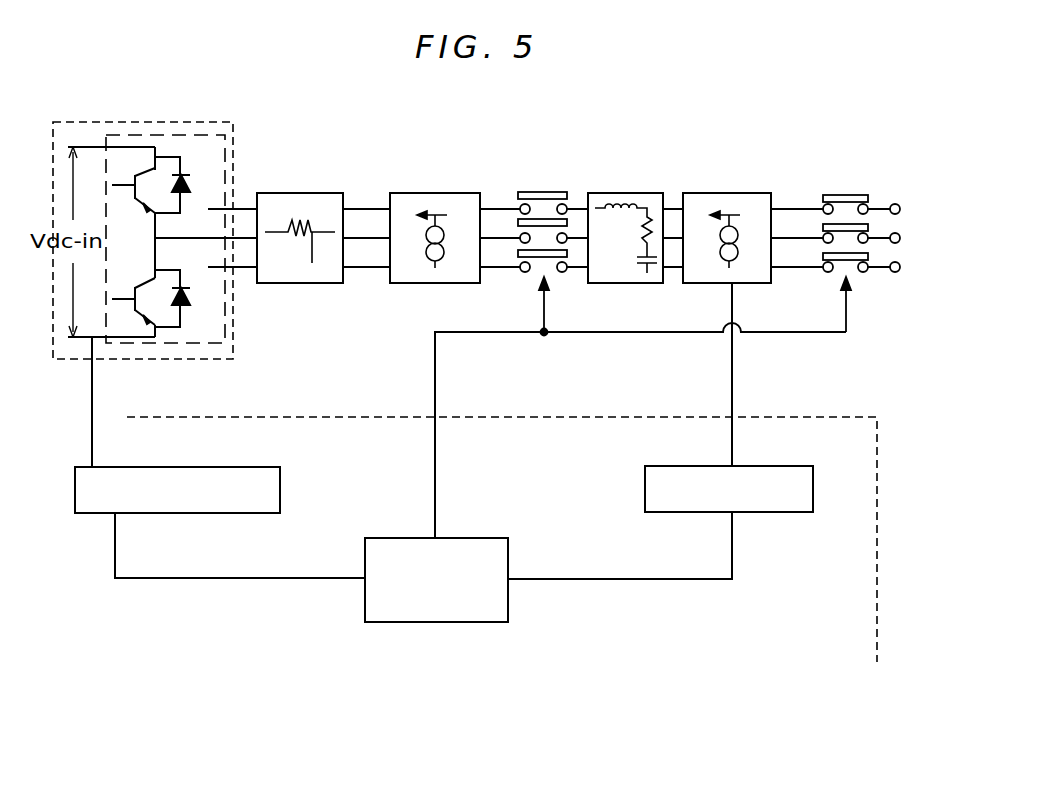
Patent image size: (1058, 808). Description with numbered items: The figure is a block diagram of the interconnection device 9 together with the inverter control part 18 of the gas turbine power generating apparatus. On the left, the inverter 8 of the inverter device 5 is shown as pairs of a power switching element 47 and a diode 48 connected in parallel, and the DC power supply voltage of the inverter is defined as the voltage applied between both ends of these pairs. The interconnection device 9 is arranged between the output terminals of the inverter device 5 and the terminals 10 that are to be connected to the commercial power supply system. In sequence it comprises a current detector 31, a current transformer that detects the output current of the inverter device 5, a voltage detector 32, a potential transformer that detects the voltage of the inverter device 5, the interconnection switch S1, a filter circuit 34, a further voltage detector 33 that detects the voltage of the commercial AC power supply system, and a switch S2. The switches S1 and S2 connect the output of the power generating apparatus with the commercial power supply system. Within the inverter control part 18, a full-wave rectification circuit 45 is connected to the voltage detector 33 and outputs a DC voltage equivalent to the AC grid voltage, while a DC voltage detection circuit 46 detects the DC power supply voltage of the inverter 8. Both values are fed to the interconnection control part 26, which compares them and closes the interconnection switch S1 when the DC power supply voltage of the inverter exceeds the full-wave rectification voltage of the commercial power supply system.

The inverter device 5 is at (237, 342).
The inverter 8 is at (200, 135).
The interconnection device 9 is at (767, 143).
The terminals 10 is at (896, 204).
The inverter control part 18 is at (773, 417).
The interconnection control part 26 is at (510, 602).
The current detector 31 is at (310, 193).
The voltage detector 32 is at (432, 193).
The voltage detector 33 is at (725, 193).
The filter circuit 34 is at (627, 192).
The full-wave rectification circuit 45 is at (755, 513).
The DC voltage detection circuit 46 is at (253, 513).
The power switching element 47 is at (147, 170).
The diode 48 is at (190, 185).
The interconnection switch S1 is at (540, 190).
The switch S2 is at (845, 193).